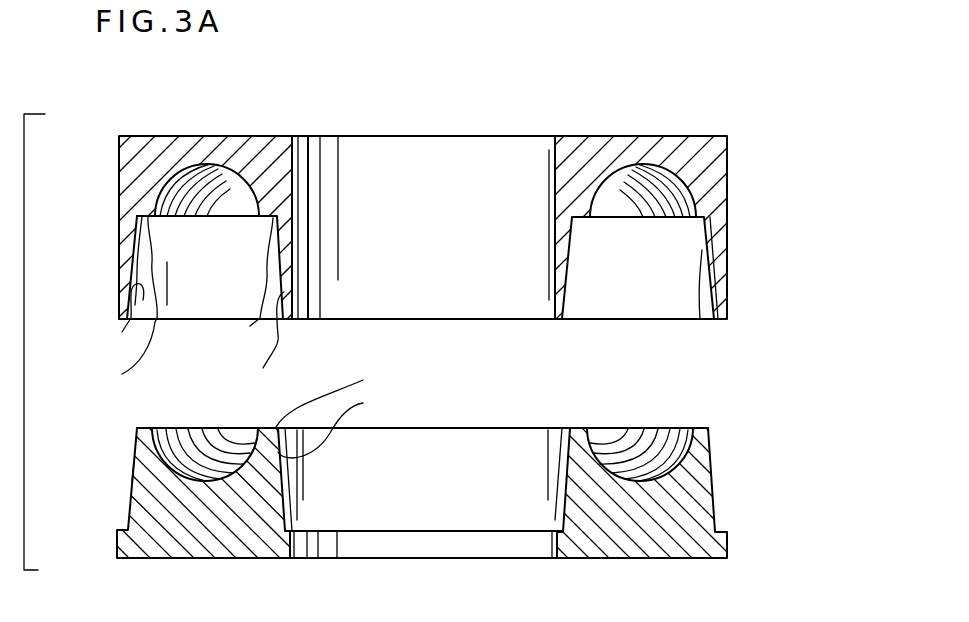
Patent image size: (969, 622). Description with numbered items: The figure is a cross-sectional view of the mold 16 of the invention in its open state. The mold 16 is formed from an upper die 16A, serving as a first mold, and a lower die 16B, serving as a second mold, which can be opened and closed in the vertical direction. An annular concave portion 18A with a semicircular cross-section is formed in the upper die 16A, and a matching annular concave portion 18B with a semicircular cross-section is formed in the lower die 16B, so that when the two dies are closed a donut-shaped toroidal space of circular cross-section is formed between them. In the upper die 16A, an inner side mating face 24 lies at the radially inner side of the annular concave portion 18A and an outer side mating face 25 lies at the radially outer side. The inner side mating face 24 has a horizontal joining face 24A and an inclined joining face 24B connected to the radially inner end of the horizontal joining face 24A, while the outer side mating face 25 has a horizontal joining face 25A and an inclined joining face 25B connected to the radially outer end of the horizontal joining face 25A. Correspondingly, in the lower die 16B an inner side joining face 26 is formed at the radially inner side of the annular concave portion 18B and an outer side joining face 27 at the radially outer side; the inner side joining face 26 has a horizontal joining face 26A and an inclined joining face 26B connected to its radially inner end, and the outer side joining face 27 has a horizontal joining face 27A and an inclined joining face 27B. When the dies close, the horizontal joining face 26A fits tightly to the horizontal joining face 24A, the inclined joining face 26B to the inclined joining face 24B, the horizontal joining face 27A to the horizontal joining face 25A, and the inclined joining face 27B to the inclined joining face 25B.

The mold 16 is at (628, 119).
The upper die 16A is at (738, 173).
The lower die 16B is at (736, 559).
The annular concave portion 18A is at (248, 217).
The annular concave portion 18B is at (243, 443).
The inner side mating face 24 is at (217, 328).
The horizontal joining face 24A is at (246, 285).
The inclined joining face 24B is at (252, 338).
The outer side mating face 25 is at (74, 325).
The horizontal joining face 25A is at (116, 304).
The inclined joining face 25B is at (110, 317).
The inner side joining face 26 is at (408, 357).
The horizontal joining face 26A is at (340, 393).
The inclined joining face 26B is at (340, 424).
The outer side joining face 27 is at (74, 417).
The horizontal joining face 27A is at (145, 427).
The inclined joining face 27B is at (131, 481).